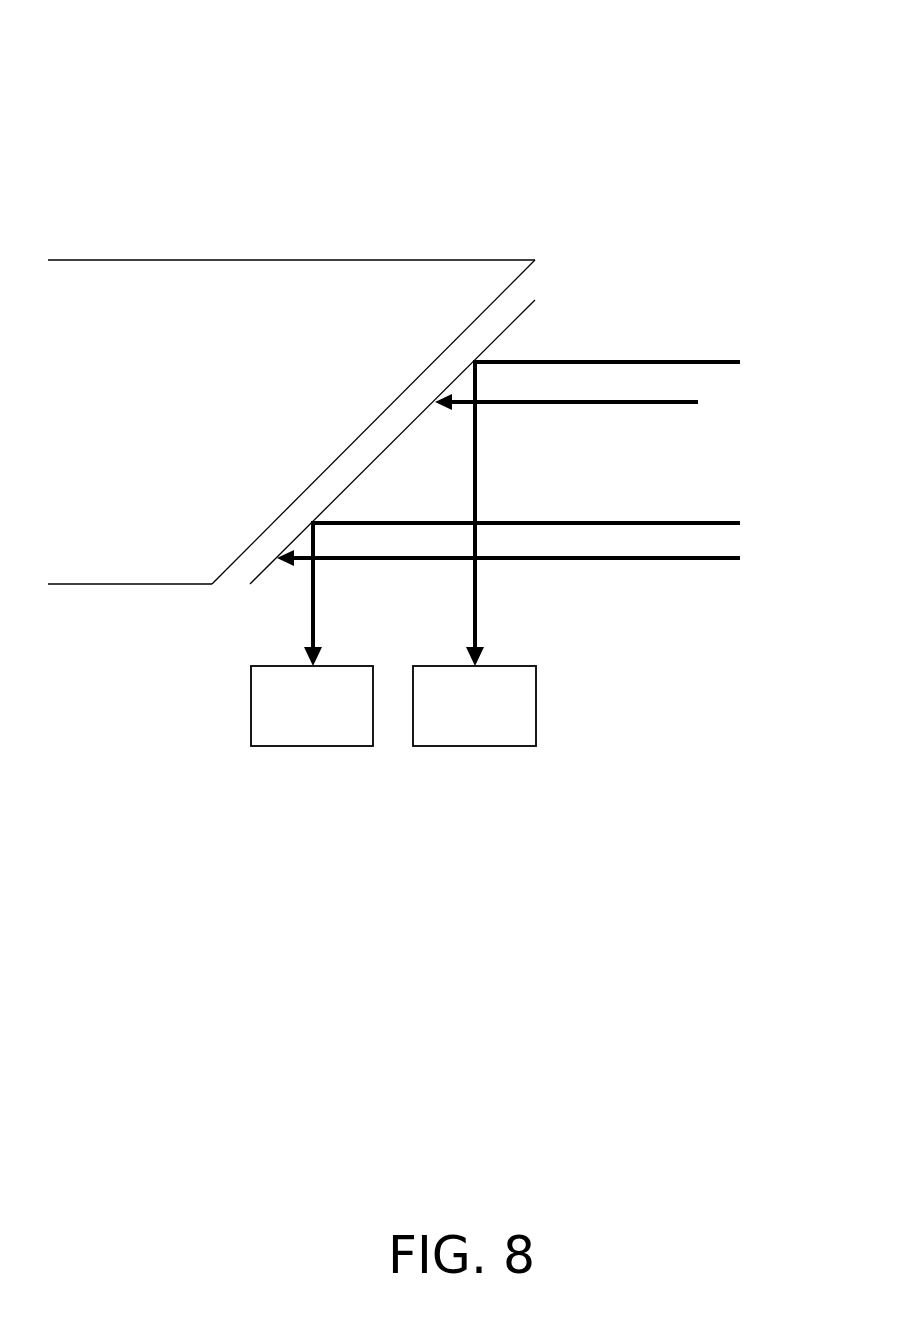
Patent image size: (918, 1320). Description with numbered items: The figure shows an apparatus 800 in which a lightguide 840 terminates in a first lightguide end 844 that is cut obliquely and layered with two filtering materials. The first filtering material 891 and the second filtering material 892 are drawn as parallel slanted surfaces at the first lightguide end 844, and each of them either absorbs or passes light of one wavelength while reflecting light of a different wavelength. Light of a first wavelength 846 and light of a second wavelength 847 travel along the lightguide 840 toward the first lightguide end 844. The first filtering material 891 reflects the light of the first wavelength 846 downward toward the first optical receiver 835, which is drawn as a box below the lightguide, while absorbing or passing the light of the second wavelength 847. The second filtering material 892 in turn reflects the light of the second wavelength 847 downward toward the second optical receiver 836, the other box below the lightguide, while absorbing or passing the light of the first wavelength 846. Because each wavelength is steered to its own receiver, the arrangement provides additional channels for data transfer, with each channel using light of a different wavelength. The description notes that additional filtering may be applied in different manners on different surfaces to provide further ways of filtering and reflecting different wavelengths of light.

The apparatus 800 is at (760, 72).
The lightguide 840 is at (302, 260).
The first lightguide end 844 is at (495, 300).
The first filtering material 891 is at (455, 380).
The second filtering material 892 is at (358, 477).
The light of a first wavelength 846 is at (686, 362).
The light of a second wavelength 847 is at (655, 405).
The second optical receiver 836 is at (291, 746).
The first optical receiver 835 is at (455, 746).